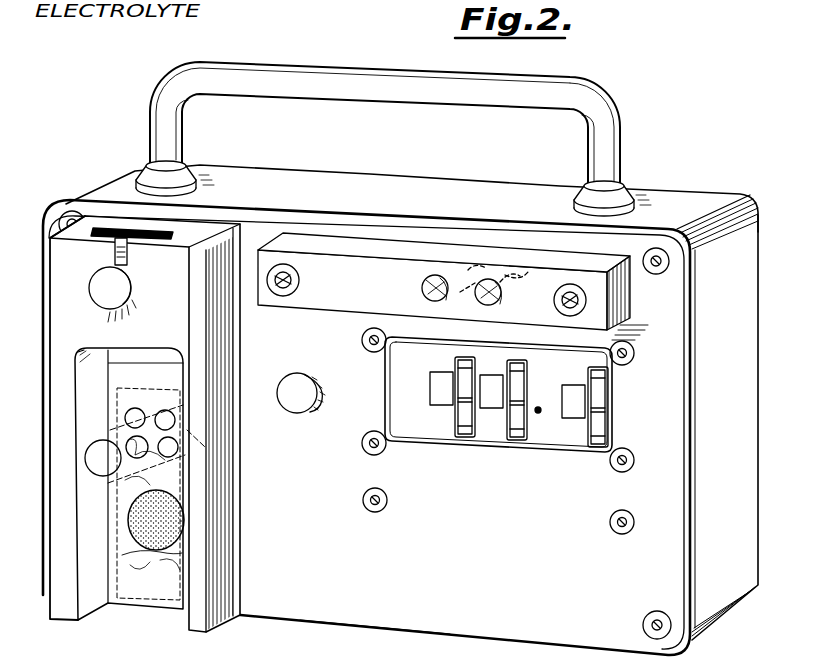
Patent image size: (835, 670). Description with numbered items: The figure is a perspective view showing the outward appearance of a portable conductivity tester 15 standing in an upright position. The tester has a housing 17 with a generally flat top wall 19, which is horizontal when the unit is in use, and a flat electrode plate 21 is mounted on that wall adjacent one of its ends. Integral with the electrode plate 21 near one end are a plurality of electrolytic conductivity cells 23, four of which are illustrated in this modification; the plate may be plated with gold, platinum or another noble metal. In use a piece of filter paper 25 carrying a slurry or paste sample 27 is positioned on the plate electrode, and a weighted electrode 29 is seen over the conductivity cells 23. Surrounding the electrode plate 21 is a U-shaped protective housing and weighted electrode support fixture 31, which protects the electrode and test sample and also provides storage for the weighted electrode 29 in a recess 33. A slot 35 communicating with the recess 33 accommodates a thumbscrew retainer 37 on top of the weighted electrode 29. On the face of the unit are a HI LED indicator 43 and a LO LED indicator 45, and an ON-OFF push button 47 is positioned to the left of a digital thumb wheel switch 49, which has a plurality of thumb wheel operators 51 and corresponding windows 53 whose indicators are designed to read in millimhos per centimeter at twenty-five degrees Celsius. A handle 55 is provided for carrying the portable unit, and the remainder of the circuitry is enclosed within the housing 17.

The portable conductivity tester 15 is at (767, 322).
The housing 17 is at (375, 630).
The top wall 19 is at (366, 430).
The electrode plate 21 is at (140, 574).
The electrolytic conductivity cells 23 is at (165, 409).
The filter paper 25 is at (184, 557).
The slurry or paste sample 27 is at (183, 533).
The weighted electrode 29 is at (136, 266).
The U-shaped protective housing and weighted electrode support fixture 31 is at (60, 273).
The recess 33 is at (160, 224).
The slot 35 is at (114, 261).
The thumbscrew retainer 37 is at (128, 300).
The HI LED indicator 43 is at (435, 275).
The LO LED indicator 45 is at (488, 279).
The ON-OFF push button 47 is at (296, 392).
The digital thumb wheel switch 49 is at (622, 406).
The thumb wheel operators 51 is at (464, 360).
The windows 53 is at (445, 372).
The handle 55 is at (160, 120).